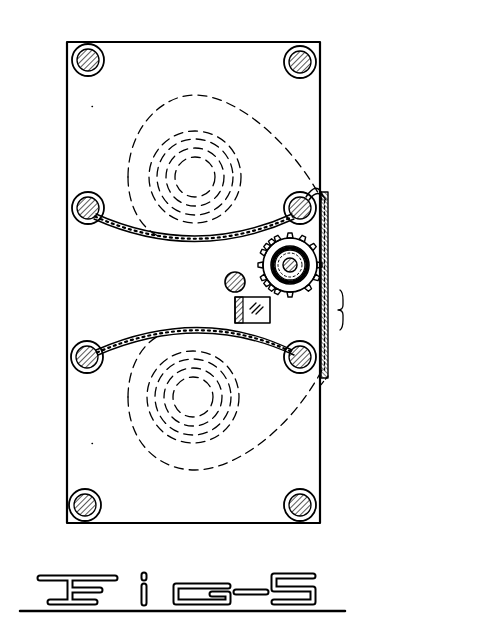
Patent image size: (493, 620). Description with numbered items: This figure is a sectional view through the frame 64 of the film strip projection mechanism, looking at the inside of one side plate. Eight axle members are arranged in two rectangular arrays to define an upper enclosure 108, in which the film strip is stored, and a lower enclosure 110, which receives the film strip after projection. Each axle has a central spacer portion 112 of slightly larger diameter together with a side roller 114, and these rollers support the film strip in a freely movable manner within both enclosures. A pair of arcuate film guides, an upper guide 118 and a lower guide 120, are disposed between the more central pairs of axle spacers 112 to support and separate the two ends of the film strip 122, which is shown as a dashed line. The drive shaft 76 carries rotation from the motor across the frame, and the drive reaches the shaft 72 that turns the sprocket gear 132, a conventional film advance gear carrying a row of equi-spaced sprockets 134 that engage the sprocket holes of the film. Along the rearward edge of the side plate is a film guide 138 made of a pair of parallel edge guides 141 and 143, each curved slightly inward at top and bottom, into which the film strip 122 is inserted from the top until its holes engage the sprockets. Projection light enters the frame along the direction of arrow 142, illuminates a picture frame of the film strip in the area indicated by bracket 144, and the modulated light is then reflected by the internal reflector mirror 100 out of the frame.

The frame 64 is at (60, 398).
The shaft 72 is at (297, 265).
The drive shaft 76 is at (227, 279).
The internal reflector mirror 100 is at (235, 300).
The upper enclosure 108 is at (122, 106).
The lower enclosure 110 is at (122, 443).
The central spacer portion 112 is at (97, 59).
The left side roller 114 is at (91, 47).
The upper guide 118 is at (150, 237).
The lower guide 120 is at (143, 336).
The film strip 122 is at (210, 96).
The sprocket gear 132 is at (312, 251).
The sprockets 134 is at (306, 232).
The film guide 138 is at (325, 197).
The edge guide 141 is at (322, 372).
The arrow 142 is at (393, 312).
The edge guide 143 is at (323, 355).
The bracket 144 is at (345, 303).